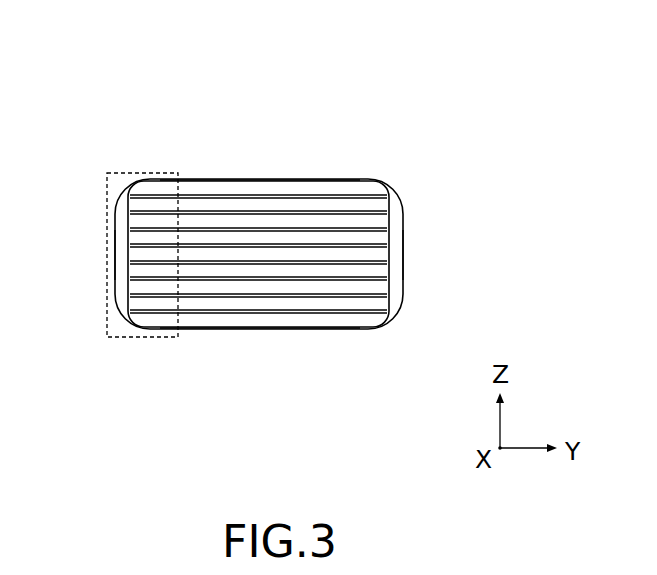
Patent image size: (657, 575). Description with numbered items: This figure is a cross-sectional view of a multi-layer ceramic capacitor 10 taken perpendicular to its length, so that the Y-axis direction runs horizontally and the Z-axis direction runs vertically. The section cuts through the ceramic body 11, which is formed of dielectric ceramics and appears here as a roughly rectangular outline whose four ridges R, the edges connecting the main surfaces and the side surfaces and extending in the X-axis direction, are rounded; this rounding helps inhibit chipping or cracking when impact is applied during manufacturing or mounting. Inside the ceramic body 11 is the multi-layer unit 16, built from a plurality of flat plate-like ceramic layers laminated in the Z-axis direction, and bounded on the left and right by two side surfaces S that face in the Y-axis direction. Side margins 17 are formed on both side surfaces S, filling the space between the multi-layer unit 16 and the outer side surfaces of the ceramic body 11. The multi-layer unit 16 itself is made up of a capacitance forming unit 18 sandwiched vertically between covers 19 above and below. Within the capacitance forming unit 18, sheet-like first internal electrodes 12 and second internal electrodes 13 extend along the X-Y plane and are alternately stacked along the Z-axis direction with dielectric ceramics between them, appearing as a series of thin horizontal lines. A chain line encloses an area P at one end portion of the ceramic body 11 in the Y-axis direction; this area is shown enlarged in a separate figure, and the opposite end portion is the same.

The multi-layer ceramic capacitor 10 is at (104, 72).
The ceramic body 11 is at (364, 106).
The first internal electrodes 12 is at (183, 295).
The second internal electrodes 13 is at (280, 312).
The multi-layer unit 16 is at (262, 158).
The side margins 17 is at (115, 258).
The capacitance forming unit 18 is at (253, 248).
The covers 19 is at (347, 179).
The area P is at (107, 175).
The ridges R is at (131, 181).
The side surfaces S is at (115, 288).